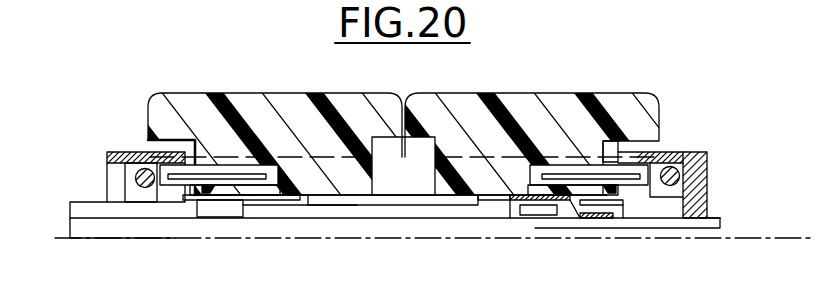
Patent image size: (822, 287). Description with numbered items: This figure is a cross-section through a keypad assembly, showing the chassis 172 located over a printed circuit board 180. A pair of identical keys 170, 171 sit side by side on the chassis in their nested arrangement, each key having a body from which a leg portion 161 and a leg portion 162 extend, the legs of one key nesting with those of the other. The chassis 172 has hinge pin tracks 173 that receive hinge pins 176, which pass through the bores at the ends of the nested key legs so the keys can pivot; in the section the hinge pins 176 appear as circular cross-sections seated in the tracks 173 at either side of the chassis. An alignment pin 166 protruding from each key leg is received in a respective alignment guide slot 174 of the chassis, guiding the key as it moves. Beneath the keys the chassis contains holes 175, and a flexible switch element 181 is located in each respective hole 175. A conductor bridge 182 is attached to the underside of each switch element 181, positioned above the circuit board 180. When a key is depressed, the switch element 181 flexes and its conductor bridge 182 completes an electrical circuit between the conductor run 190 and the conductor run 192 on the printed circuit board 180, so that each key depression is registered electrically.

The leg portion 161 is at (198, 148).
The leg portion 162 is at (618, 145).
The alignment pin 166 is at (167, 192).
The key 170 is at (301, 92).
The key 171 is at (508, 92).
The chassis 172 is at (107, 172).
The hinge pin track 173 is at (673, 193).
The alignment guide slot 174 is at (175, 192).
The hole 175 is at (457, 207).
The hinge pin 176 is at (146, 162).
The printed circuit board 180 is at (78, 228).
The flexible switch element 181 is at (274, 206).
The conductor bridge 182 is at (533, 207).
The conductor run 190 is at (711, 229).
The conductor run 192 is at (717, 220).